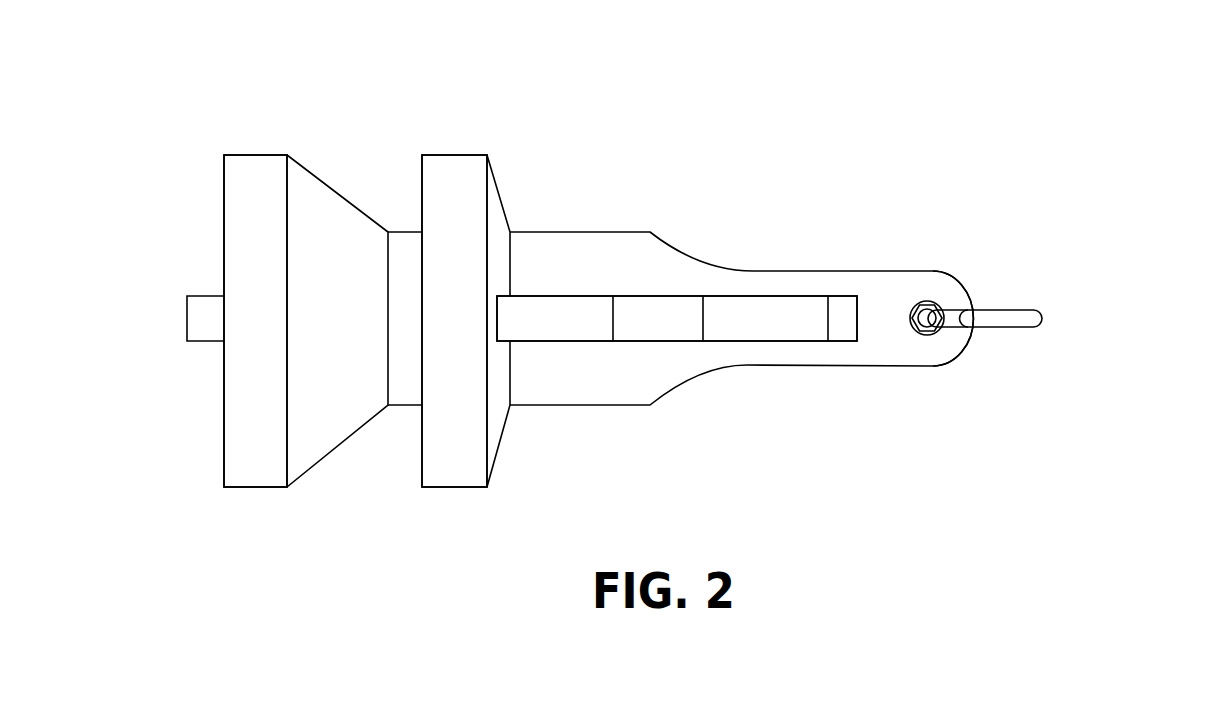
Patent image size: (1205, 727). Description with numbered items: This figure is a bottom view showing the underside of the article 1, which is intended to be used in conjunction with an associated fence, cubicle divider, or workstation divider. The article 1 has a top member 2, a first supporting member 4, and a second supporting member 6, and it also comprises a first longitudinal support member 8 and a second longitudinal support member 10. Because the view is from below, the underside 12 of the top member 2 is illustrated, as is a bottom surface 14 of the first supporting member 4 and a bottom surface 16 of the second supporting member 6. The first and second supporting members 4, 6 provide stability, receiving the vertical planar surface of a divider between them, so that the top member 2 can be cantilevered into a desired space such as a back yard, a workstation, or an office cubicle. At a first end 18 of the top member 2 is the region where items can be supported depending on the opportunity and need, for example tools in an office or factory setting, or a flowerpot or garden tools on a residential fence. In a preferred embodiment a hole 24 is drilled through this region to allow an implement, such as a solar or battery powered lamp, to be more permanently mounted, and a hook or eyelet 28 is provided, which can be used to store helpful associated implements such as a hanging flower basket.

The article 1 is at (895, 85).
The top member 2 is at (645, 242).
The first supporting member 4 is at (243, 168).
The second supporting member 6 is at (453, 167).
The first longitudinal support member 8 is at (197, 323).
The second longitudinal support member 10 is at (800, 310).
The underside 12 is at (787, 288).
The bottom surface 14 is at (255, 462).
The bottom surface 16 is at (455, 207).
The first end 18 is at (935, 280).
The hole 24 is at (932, 335).
The hook or eyelet 28 is at (1040, 315).